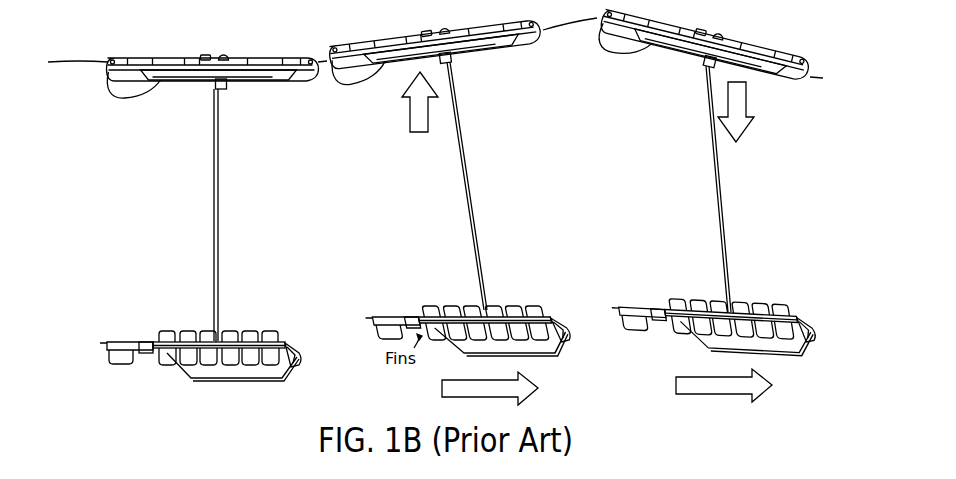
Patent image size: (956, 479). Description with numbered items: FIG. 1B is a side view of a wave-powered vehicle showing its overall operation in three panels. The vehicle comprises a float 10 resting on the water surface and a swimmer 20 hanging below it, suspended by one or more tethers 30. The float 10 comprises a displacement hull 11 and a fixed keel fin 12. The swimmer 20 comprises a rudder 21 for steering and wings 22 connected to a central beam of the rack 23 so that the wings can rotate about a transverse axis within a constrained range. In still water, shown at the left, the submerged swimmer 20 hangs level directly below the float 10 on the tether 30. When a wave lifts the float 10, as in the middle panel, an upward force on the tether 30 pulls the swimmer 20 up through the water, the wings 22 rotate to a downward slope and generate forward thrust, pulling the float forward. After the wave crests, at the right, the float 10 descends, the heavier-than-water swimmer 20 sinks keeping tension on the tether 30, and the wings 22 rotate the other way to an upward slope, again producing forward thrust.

The float 10 is at (196, 72).
The displacement hull 11 is at (285, 82).
The fixed keel fin 12 is at (115, 97).
The swimmer 20 is at (196, 355).
The rudder 21 is at (108, 358).
The wings 22 is at (250, 331).
The rack 23 is at (288, 345).
The tether 30 is at (219, 207).